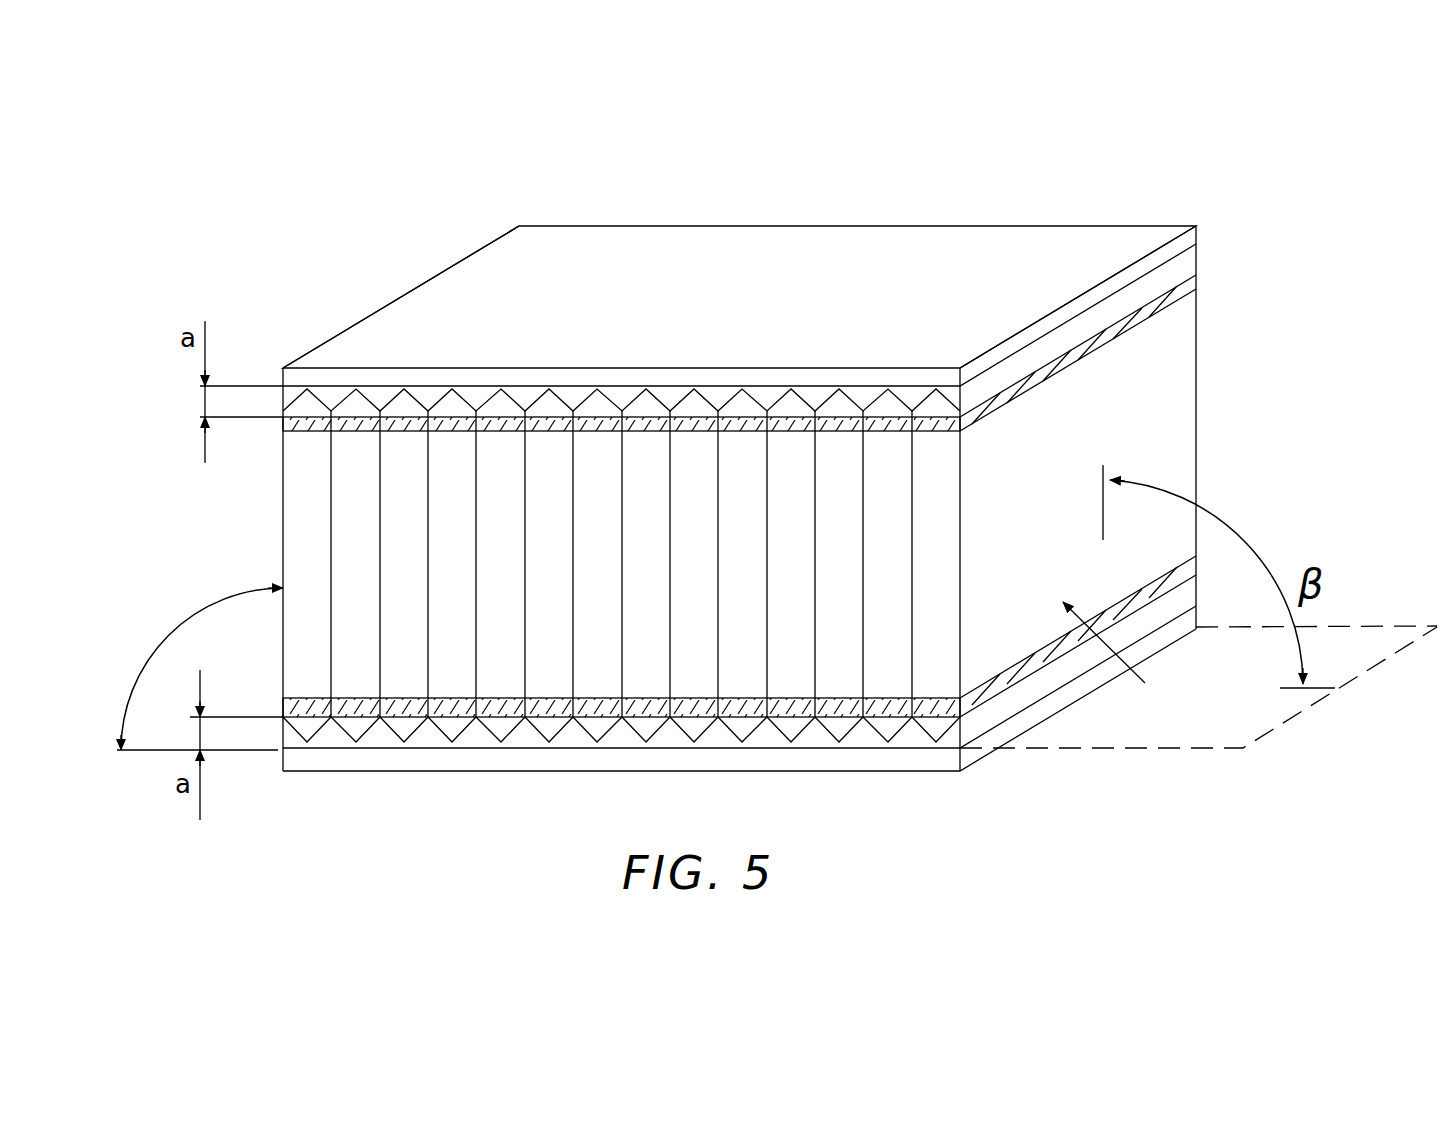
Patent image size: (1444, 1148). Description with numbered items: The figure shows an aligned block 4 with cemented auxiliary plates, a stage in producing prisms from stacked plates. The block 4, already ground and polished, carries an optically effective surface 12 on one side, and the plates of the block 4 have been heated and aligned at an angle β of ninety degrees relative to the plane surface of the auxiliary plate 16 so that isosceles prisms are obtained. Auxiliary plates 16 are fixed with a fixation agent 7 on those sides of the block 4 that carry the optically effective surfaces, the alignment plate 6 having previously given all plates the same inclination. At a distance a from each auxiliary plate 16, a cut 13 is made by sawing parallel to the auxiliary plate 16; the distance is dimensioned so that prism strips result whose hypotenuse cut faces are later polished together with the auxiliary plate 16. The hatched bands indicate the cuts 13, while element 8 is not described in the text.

The block 4 is at (1113, 655).
The alignment plate 6 is at (1120, 238).
The fixation agent 7 is at (1198, 262).
The prism structure 8 is at (443, 740).
The second optically effective surface 12 is at (487, 740).
The cut 13 is at (285, 425).
The auxiliary plate 16 is at (1002, 746).